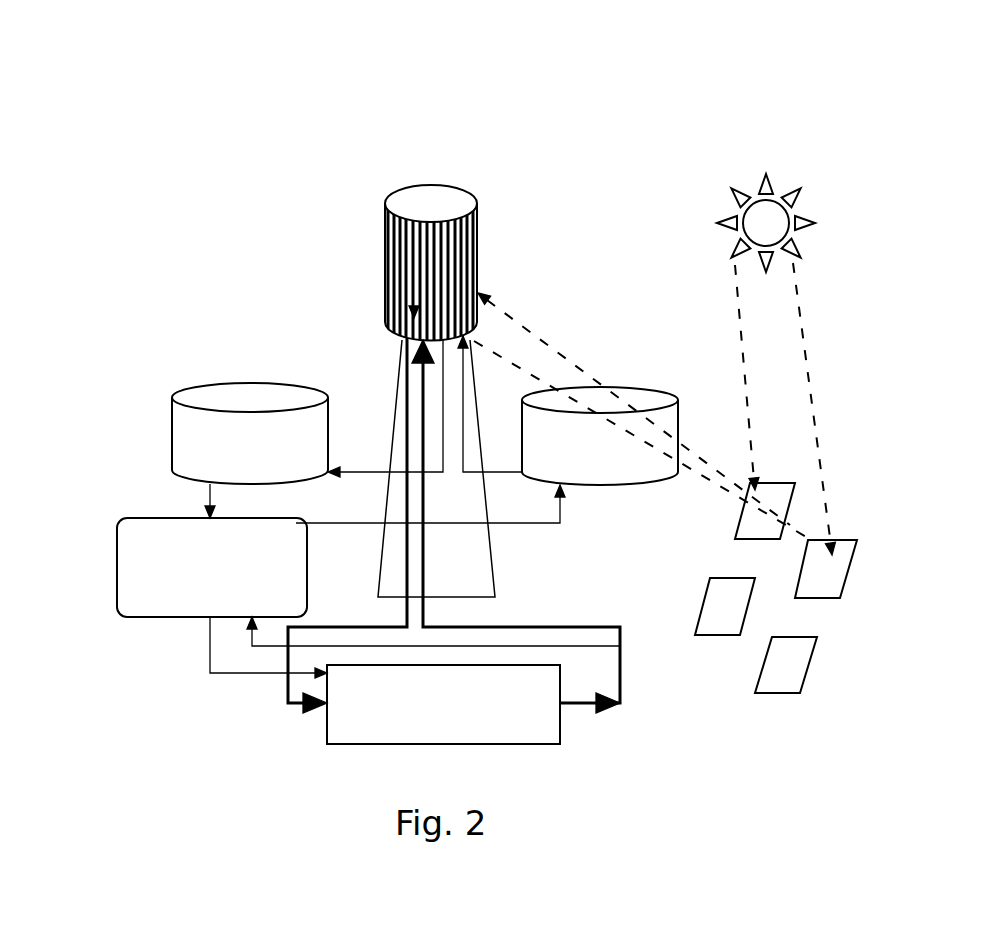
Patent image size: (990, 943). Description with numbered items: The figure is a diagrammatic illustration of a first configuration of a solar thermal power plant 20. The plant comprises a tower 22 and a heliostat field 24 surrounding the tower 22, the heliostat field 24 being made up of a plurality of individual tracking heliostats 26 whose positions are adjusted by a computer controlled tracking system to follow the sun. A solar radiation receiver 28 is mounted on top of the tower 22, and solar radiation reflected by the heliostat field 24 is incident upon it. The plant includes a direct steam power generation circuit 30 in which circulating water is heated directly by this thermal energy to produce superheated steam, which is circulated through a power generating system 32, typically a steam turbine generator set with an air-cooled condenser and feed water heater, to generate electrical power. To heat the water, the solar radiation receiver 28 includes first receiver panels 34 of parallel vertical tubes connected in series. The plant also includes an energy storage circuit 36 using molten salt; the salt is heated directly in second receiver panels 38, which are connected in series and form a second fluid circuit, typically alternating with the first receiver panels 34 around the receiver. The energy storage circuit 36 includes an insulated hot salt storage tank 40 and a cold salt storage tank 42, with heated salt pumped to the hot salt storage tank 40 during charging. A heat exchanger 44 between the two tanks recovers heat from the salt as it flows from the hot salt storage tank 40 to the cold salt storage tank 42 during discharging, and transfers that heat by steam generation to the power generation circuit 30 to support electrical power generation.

The solar thermal power plant 20 is at (553, 104).
The tower 22 is at (395, 403).
The heliostat field 24 is at (864, 624).
The tracking heliostats 26 is at (720, 622).
The solar radiation receiver 28 is at (411, 171).
The direct steam power generation circuit 30 is at (440, 570).
The power generating system 32 is at (457, 720).
The first receiver panels 34 is at (370, 228).
The energy storage circuit 36 is at (478, 353).
The second receiver panels 38 is at (470, 257).
The hot salt storage tank 40 is at (265, 456).
The cold salt storage tank 42 is at (619, 456).
The heat exchanger 44 is at (226, 581).